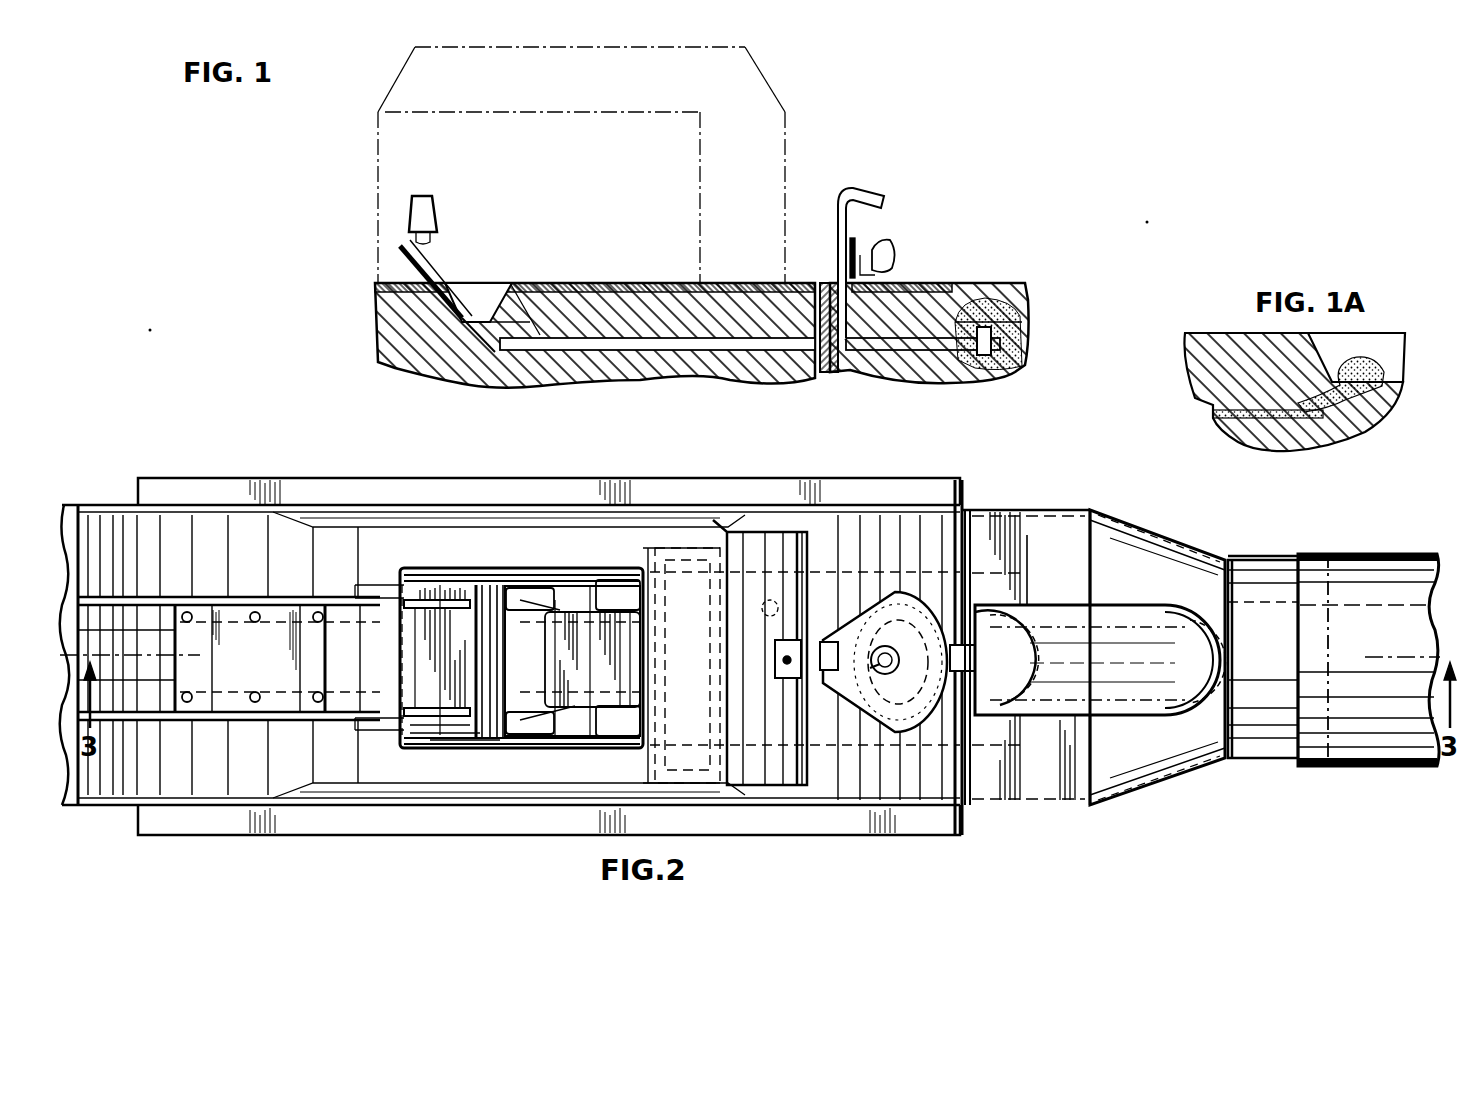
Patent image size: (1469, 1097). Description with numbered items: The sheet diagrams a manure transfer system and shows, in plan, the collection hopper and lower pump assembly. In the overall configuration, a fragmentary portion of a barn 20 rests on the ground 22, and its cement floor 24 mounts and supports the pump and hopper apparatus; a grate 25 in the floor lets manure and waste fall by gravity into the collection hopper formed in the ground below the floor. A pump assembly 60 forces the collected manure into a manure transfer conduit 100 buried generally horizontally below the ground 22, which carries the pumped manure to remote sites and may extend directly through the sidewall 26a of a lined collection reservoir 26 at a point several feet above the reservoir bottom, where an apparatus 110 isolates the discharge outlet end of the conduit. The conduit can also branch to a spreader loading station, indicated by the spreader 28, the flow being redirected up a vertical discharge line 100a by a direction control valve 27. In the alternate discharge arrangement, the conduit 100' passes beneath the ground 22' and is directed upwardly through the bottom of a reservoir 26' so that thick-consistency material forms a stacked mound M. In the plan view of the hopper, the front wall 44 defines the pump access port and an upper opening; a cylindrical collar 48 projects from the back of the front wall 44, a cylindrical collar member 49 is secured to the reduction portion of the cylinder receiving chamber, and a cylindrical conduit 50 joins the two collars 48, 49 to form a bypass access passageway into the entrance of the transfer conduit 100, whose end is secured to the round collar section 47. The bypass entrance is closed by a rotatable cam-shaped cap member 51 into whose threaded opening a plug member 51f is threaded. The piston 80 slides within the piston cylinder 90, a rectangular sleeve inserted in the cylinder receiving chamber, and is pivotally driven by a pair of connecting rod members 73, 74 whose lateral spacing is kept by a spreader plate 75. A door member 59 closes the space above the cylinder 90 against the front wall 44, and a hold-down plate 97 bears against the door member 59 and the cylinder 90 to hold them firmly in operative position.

In FIG. 1, the barn 20 is at (773, 77).
In FIG. 1, the ground 22 is at (864, 265).
In FIG. 1, the cement floor 24 is at (592, 293).
In FIG. 1, the grate 25 is at (477, 283).
In FIG. 1, the collection reservoir 26 is at (938, 311).
In FIG. 1, the sidewall of collection reservoir 26a is at (940, 312).
In FIG. 1, the direction control valve 27 is at (836, 372).
In FIG. 1, the spreader 28 is at (890, 250).
In FIG. 1, the pump assembly 60 is at (400, 218).
In FIG. 1, the manure transfer conduit 100 is at (750, 374).
In FIG. 2, the manure transfer conduit 100 is at (1368, 641).
In FIG. 1, the vertical discharge line 100a is at (845, 192).
In FIG. 1, the apparatus for isolating the discharge outlet end 110 is at (995, 342).
In FIG. 1A, the ground surface 22' is at (1293, 369).
In FIG. 1A, the ground area 26' is at (1383, 357).
In FIG. 1A, the mound M is at (1358, 362).
In FIG. 1A, the conduit 100' is at (1256, 437).
In FIG. 2, the hold-down plate 97 is at (567, 505).
In FIG. 2, the front wall 44 is at (905, 515).
In FIG. 2, the collar section 47 is at (1255, 575).
In FIG. 2, the cylindrical collar 48 is at (1002, 705).
In FIG. 2, the cylindrical collar member 49 is at (1192, 628).
In FIG. 2, the cylindrical conduit 50 is at (1120, 608).
In FIG. 2, the cap member 51 is at (862, 618).
In FIG. 2, the plug member 51f is at (876, 666).
In FIG. 2, the door member 59 is at (795, 562).
In FIG. 2, the connecting rod member 73 is at (145, 720).
In FIG. 2, the connecting rod member 74 is at (148, 603).
In FIG. 2, the spreader plate 75 is at (290, 606).
In FIG. 2, the piston 80 is at (383, 573).
In FIG. 2, the piston cylinder 90 is at (453, 573).